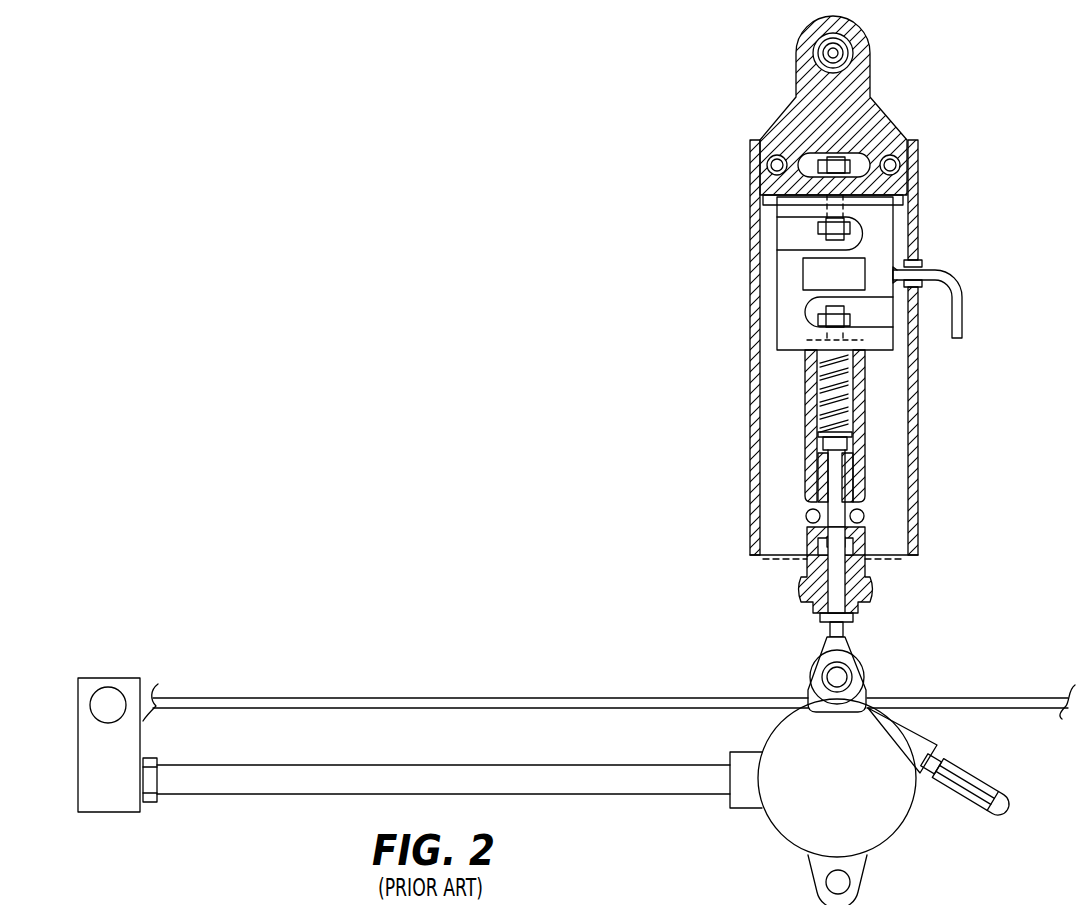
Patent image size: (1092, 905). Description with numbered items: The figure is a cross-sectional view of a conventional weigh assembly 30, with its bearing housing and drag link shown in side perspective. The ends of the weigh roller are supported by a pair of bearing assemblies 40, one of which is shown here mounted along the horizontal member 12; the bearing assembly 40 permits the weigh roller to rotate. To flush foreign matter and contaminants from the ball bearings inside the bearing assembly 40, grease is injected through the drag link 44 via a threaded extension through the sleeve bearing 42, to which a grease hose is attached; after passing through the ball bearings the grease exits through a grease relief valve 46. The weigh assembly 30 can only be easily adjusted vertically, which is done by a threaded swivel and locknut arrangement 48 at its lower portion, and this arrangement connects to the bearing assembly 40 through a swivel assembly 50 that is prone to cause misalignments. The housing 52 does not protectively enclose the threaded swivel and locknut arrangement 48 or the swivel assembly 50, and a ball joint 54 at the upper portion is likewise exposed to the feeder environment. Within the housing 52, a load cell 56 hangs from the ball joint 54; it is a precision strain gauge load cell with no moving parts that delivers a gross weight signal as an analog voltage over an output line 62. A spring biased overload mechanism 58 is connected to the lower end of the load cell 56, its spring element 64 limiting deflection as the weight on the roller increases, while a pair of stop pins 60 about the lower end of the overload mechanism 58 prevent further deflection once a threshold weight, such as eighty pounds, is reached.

The beam / rail 12 is at (495, 698).
The weigh assembly 30 is at (710, 287).
The bearing assembly 40 is at (770, 836).
The sleeve bearing 42 is at (74, 692).
The drag link 44 is at (274, 765).
The grease relief valve 46 is at (975, 772).
The threaded swivel and locknut arrangement 48 is at (796, 567).
The swivel assembly 50 is at (815, 645).
The housing 52 is at (777, 272).
The ball joint 54 is at (848, 54).
The load cell 56 is at (803, 272).
The spring biased overload mechanism 58 is at (833, 438).
The stop pins 60 is at (864, 515).
The output line 62 is at (962, 313).
The spring element 64 is at (845, 395).